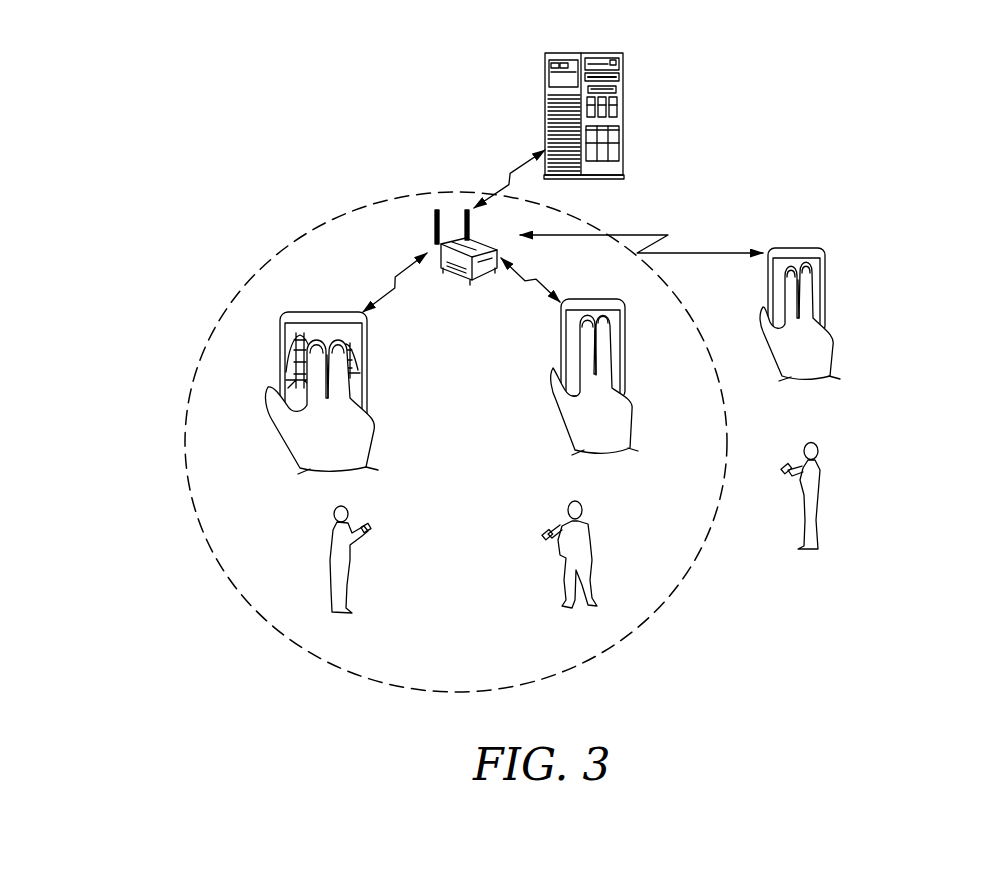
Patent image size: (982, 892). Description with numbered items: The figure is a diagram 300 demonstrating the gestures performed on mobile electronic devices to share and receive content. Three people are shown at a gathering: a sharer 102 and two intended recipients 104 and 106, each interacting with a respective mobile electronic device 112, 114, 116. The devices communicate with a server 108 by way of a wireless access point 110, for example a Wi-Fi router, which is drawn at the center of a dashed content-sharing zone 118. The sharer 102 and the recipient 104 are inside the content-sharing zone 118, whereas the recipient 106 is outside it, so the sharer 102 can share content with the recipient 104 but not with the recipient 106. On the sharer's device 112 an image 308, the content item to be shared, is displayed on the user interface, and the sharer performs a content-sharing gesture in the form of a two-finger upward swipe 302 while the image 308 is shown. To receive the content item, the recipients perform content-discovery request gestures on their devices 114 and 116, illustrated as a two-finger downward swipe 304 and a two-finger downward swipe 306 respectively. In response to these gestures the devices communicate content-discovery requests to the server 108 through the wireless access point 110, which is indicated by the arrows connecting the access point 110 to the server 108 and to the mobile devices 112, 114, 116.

The diagram 300 is at (967, 105).
The person 102 is at (332, 553).
The person 104 is at (592, 547).
The person 106 is at (820, 497).
The server 108 is at (627, 132).
The wireless access point 110 is at (436, 222).
The mobile electronic device 112 is at (322, 377).
The mobile electronic device 114 is at (596, 377).
The mobile electronic device 116 is at (821, 314).
The content-sharing zone 118 is at (303, 233).
The two-finger upward swipe 302 is at (332, 346).
The two-finger downward swipe 304 is at (583, 329).
The two-finger downward swipe 306 is at (808, 270).
The image 308 is at (345, 320).